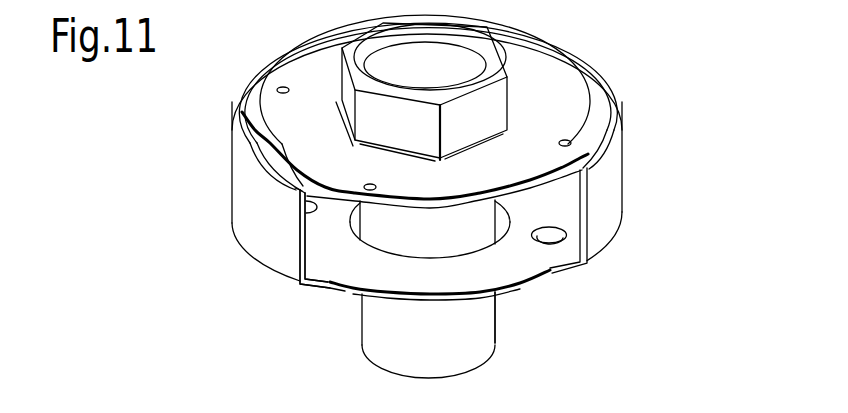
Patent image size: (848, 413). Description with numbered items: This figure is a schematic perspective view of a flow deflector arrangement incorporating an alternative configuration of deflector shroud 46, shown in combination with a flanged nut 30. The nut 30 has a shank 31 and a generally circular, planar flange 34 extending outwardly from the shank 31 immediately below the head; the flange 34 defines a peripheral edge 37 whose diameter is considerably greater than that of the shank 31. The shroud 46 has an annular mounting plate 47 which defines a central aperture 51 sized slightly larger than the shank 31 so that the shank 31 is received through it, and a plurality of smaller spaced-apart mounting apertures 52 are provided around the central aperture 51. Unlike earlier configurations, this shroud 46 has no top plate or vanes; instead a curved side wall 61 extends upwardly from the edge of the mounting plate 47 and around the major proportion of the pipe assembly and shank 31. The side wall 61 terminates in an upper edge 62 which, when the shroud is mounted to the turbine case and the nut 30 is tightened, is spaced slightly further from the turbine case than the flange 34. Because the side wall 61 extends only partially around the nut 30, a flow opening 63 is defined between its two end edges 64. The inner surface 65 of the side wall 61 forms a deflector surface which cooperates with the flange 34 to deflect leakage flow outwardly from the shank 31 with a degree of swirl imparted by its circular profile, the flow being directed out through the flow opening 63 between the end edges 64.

The nut 30 is at (541, 70).
The shank 31 is at (388, 345).
The flange 34 is at (570, 110).
The peripheral edge 37 is at (300, 175).
The shroud 46 is at (656, 143).
The mounting plate 47 is at (517, 265).
The central aperture 51 is at (380, 250).
The mounting apertures 52 is at (552, 240).
The side wall 61 is at (260, 208).
The upper edge 62 is at (233, 133).
The flow opening 63 is at (470, 276).
The end edges 64 is at (306, 242).
The inner surface 65 is at (245, 105).